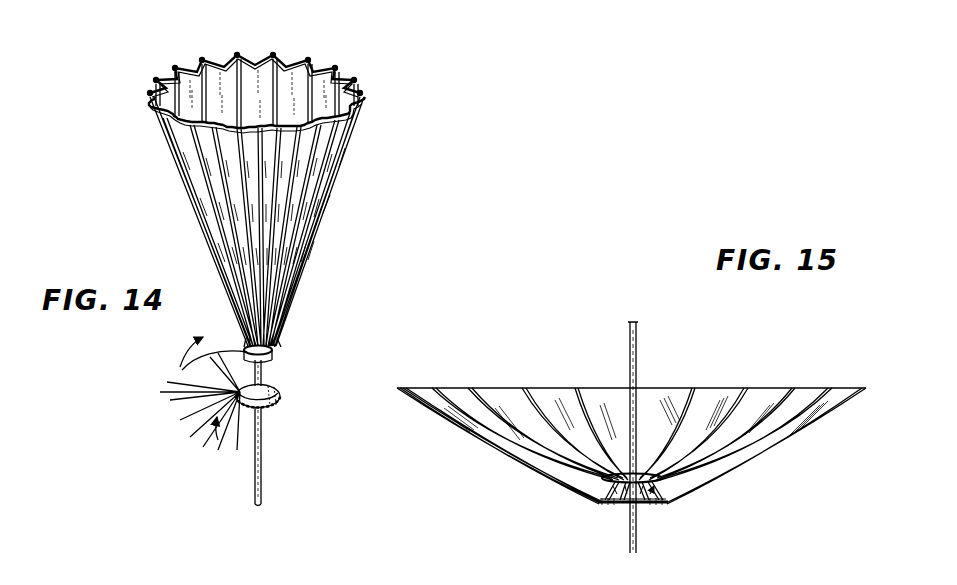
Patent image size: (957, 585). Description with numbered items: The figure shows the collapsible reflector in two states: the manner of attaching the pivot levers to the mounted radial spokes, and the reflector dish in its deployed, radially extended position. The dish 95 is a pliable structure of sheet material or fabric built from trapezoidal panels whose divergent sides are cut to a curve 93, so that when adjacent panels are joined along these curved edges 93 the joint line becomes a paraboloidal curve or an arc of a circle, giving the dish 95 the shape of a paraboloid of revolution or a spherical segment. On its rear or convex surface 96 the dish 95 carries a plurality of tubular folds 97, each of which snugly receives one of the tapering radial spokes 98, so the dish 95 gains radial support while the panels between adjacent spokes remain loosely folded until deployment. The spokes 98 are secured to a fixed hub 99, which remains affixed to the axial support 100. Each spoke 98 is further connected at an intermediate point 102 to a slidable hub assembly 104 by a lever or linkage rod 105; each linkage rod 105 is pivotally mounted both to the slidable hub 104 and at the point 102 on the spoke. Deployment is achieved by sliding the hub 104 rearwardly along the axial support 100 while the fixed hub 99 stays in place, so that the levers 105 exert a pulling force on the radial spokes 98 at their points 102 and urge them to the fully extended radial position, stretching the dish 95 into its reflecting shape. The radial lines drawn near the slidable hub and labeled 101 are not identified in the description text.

In FIG. 14, the curved edge 93 is at (245, 60).
In FIG. 14, the dish 95 is at (284, 90).
In FIG. 15, the dish 95 is at (713, 408).
In FIG. 14, the convex surface 96 is at (208, 165).
In FIG. 15, the convex surface 96 is at (800, 432).
In FIG. 14, the folds 97 is at (298, 175).
In FIG. 15, the folds 97 is at (538, 420).
In FIG. 14, the radial spokes 98 is at (348, 112).
In FIG. 15, the radial spokes 98 is at (523, 390).
In FIG. 14, the fixed hub 99 is at (272, 362).
In FIG. 15, the fixed hub 99 is at (606, 495).
In FIG. 14, the axial support 100 is at (262, 464).
In FIG. 15, the axial support 100 is at (637, 346).
In FIG. 14, the radial arms 101 is at (195, 392).
In FIG. 14, the intermediate point 102 is at (275, 284).
In FIG. 15, the intermediate point 102 is at (718, 470).
In FIG. 14, the slidable hub assembly 104 is at (280, 408).
In FIG. 15, the slidable hub assembly 104 is at (652, 505).
In FIG. 14, the linkage rod 105 is at (274, 366).
In FIG. 15, the linkage rod 105 is at (697, 494).